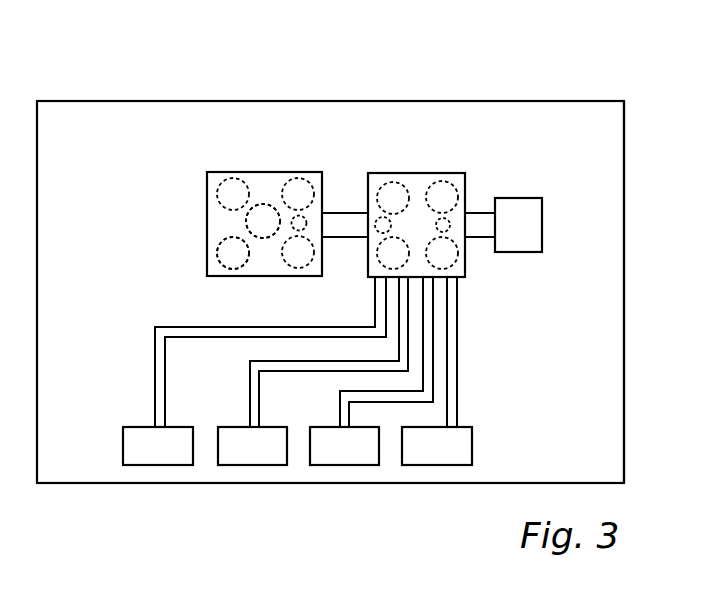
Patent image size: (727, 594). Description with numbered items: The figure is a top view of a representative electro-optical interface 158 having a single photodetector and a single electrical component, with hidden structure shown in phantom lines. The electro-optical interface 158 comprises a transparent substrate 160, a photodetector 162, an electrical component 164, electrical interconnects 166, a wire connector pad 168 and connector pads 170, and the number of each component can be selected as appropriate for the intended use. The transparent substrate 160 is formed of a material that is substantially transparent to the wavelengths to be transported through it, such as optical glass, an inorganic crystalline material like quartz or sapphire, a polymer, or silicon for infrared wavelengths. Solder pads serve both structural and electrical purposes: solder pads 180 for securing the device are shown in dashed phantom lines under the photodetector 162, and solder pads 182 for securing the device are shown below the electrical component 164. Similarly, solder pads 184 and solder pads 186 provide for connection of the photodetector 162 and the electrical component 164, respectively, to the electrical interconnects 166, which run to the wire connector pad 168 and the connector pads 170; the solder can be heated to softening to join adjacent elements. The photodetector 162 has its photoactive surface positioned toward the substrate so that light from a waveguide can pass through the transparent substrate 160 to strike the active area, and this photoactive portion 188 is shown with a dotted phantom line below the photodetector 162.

The electro-optical interface 158 is at (548, 101).
The transparent substrate 160 is at (610, 288).
The photodetector 162 is at (262, 183).
The electrical component 164 is at (406, 182).
The electrical interconnects 166 is at (340, 222).
The wire connector pad 168 is at (525, 205).
The connector pads 170 is at (430, 453).
The solder pads 180 is at (228, 252).
The solder pads 182 is at (445, 256).
The solder pads 184 is at (293, 227).
The solder pads 186 is at (452, 228).
The photoactive portion 188 is at (252, 222).